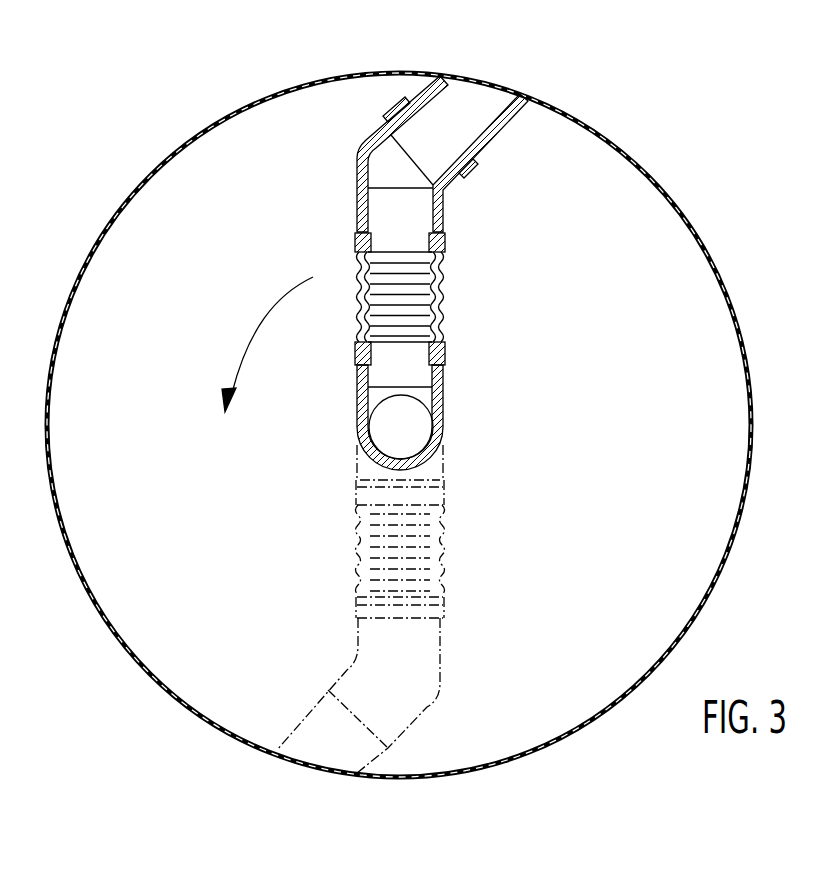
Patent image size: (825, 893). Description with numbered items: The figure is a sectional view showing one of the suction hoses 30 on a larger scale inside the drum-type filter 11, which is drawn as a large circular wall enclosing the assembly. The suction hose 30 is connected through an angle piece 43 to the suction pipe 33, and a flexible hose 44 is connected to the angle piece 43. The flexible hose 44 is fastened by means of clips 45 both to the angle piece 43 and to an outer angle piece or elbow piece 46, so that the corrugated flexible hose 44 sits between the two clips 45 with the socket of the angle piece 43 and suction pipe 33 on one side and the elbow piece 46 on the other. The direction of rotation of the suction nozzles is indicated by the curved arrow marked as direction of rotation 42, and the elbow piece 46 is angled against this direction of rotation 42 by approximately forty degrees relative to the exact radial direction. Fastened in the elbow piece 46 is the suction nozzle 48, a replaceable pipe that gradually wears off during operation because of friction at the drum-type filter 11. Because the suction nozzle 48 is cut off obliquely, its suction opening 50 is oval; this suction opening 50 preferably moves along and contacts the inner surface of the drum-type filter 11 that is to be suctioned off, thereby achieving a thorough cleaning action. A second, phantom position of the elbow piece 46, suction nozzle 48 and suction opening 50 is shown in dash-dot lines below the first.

The drum-type filter 11 is at (570, 112).
The suction hose 30 is at (470, 298).
The suction pipe 33 is at (427, 404).
The direction of rotation 42 is at (253, 332).
The angle piece 43 is at (443, 432).
The flexible hose 44 is at (361, 313).
The clip 45 is at (445, 238).
The elbow piece 46 is at (357, 168).
The suction nozzle 48 is at (497, 128).
The suction opening 50 is at (473, 100).